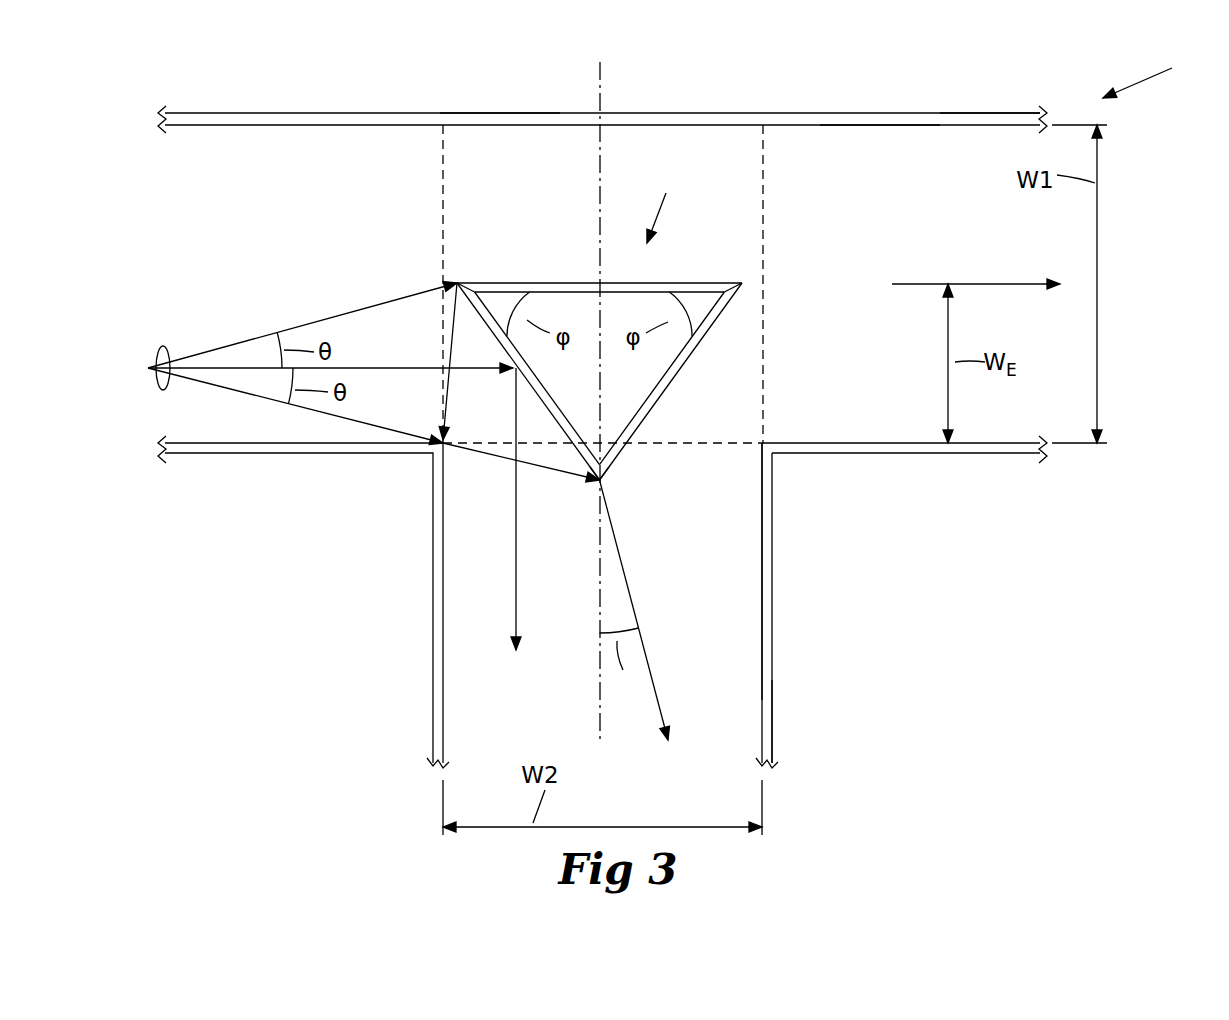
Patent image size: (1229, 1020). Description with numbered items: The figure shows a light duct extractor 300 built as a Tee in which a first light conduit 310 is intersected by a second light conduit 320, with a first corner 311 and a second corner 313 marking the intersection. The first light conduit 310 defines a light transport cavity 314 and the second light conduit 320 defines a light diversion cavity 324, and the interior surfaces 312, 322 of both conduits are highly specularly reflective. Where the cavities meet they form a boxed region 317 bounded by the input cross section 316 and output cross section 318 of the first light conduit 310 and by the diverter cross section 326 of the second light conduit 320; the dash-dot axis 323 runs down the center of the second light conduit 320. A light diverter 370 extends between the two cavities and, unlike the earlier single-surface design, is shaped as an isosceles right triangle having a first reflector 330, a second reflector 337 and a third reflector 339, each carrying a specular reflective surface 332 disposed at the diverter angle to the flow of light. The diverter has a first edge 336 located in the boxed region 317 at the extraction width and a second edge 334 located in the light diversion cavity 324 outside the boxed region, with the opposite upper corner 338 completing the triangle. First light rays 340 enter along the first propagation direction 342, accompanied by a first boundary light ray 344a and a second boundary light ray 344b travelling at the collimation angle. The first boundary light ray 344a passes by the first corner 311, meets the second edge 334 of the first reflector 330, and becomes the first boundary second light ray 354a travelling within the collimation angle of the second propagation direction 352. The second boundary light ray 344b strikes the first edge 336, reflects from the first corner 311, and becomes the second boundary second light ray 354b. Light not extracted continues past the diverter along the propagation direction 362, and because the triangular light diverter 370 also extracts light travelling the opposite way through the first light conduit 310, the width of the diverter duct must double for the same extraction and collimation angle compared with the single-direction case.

The light duct extractor 300 is at (1158, 73).
The first light conduit 310 is at (915, 122).
The first corner 311 is at (466, 444).
The interior surface 312 is at (883, 125).
The second corner 313 is at (760, 442).
The light transport cavity 314 is at (980, 147).
The input cross section 316 is at (440, 180).
The boxed region 317 is at (488, 137).
The output cross section 318 is at (765, 287).
The second light conduit 320 is at (768, 690).
The interior surface 322 is at (758, 668).
The axis 323 is at (604, 73).
The light diversion cavity 324 is at (733, 731).
The diverter cross section 326 is at (730, 448).
The first reflector 330 is at (538, 384).
The reflective surface 332 is at (545, 428).
The second edge 334 is at (603, 483).
The first edge 336 is at (453, 282).
The second reflector 337 is at (648, 413).
The second edge of second reflector 338 is at (742, 282).
The third reflector 339 is at (568, 288).
The first light rays 340 is at (162, 345).
The first propagation direction 342 is at (243, 366).
The first boundary light ray 344a is at (228, 390).
The second boundary light ray 344b is at (292, 327).
The second propagation direction 352 is at (516, 600).
The first boundary second light ray 354a is at (632, 606).
The second boundary second light ray 354b is at (450, 338).
The propagation direction 362 is at (1013, 280).
The light diverter 370 is at (669, 201).